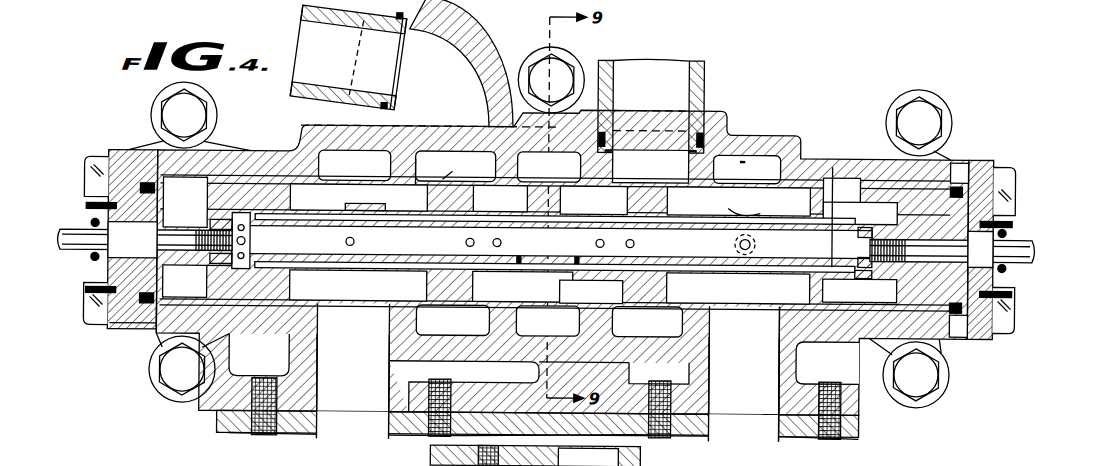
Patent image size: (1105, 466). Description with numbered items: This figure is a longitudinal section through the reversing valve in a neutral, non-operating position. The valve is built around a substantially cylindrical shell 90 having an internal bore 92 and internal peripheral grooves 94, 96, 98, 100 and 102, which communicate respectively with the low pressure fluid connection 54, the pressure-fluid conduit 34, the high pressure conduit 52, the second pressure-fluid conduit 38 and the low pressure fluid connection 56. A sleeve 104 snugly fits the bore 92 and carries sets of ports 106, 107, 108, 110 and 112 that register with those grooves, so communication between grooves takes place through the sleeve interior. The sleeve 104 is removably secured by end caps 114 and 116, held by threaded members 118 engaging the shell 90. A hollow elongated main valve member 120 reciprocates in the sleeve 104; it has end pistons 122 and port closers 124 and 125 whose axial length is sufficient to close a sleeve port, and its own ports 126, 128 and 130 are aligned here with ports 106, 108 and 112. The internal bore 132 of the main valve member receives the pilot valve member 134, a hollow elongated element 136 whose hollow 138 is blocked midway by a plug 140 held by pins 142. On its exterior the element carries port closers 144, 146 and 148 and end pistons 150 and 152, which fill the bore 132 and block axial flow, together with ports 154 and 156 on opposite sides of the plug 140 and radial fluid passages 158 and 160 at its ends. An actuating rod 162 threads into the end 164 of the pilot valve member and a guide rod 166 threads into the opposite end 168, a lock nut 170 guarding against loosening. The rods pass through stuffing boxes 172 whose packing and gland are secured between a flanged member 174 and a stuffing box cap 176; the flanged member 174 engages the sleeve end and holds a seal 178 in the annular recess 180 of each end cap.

The pressure-fluid conduit 34 is at (303, 42).
The second pressure-fluid conduit 38 is at (657, 75).
The conduit 52 is at (545, 460).
The low pressure fluid connection 54 is at (330, 410).
The low pressure fluid connection 56 is at (780, 370).
The shell 90 is at (782, 140).
The internal bore 92 is at (736, 203).
The peripheral groove 94 is at (308, 152).
The peripheral groove 96 is at (464, 374).
The peripheral groove 98 is at (584, 359).
The peripheral groove 100 is at (659, 360).
The peripheral groove 102 is at (742, 160).
The sleeve 104 is at (775, 320).
The ports 106 is at (353, 294).
The ports 107 is at (454, 243).
The ports 108 is at (548, 244).
The ports 110 is at (649, 243).
The ports 112 is at (744, 298).
The end cap 114 is at (125, 153).
The end cap 116 is at (980, 172).
The threaded members 118 is at (86, 178).
The main valve member 120 is at (435, 171).
The end pistons 122 is at (240, 195).
The port closer 124 is at (387, 286).
The port closer 125 is at (591, 291).
The port 126 is at (358, 285).
The port 128 is at (523, 286).
The port 130 is at (770, 291).
The internal bore 132 is at (370, 198).
The pilot valve member 134 is at (222, 272).
The hollow elongated element 136 is at (738, 288).
The hollow 138 is at (832, 165).
The plug 140 is at (552, 244).
The pins 142 is at (578, 228).
The port closer 144 is at (500, 198).
The port closer 146 is at (590, 200).
The port closer 148 is at (738, 201).
The end piston 150 is at (358, 197).
The end piston 152 is at (815, 200).
The port 154 is at (423, 241).
The port 156 is at (633, 241).
The radial fluid passage 158 is at (250, 244).
The radial fluid passage 160 is at (878, 215).
The actuating rod 162 is at (62, 240).
The end 164 is at (250, 336).
The guide rod 166 is at (1036, 247).
The end 168 is at (875, 271).
The lock nut 170 is at (212, 258).
The stuffing box 172 is at (86, 293).
The flanged member 174 is at (150, 330).
The stuffing box cap 176 is at (91, 262).
The seal 178 is at (146, 176).
The annular recess 180 is at (130, 322).